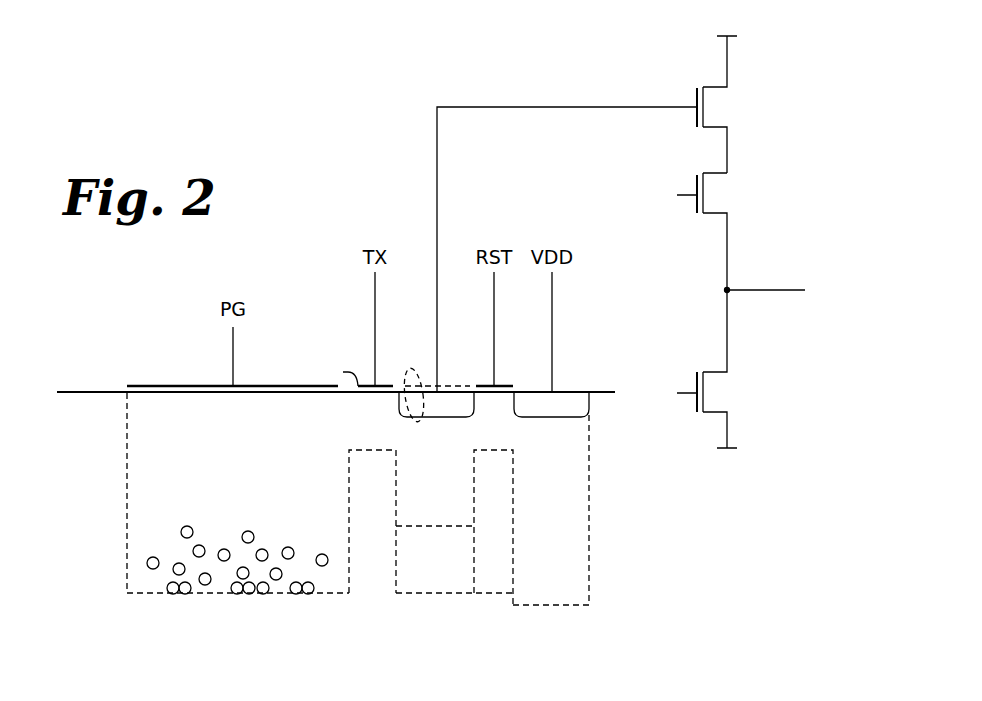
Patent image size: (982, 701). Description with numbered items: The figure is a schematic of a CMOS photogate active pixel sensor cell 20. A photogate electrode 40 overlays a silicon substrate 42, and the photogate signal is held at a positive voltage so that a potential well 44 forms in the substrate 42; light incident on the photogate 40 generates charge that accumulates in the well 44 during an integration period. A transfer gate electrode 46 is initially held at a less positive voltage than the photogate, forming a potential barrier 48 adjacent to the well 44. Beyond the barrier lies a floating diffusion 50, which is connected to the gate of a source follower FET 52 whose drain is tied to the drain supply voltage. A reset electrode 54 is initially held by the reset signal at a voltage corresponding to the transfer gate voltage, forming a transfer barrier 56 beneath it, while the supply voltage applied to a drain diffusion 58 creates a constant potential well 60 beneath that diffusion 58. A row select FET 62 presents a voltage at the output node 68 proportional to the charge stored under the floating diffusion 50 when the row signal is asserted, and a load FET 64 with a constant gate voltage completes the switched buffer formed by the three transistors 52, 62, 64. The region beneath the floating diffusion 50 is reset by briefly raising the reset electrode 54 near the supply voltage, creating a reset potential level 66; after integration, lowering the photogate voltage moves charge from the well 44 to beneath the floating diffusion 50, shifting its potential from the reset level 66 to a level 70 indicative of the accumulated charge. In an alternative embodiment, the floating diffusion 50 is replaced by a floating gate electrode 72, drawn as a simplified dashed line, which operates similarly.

The pixel sensor cell 20 is at (325, 168).
The photogate electrode 40 is at (283, 387).
The silicon substrate 42 is at (88, 512).
The potential well 44 is at (220, 595).
The transfer gate electrode 46 is at (392, 387).
The potential barrier 48 is at (370, 449).
The floating diffusion 50 is at (450, 392).
The source follower FET 52 is at (692, 95).
The reset electrode 54 is at (503, 387).
The transfer barrier 56 is at (502, 449).
The drain diffusion 58 is at (565, 393).
The constant potential well 60 is at (558, 602).
The row select FET 62 is at (692, 180).
The load FET 64 is at (692, 375).
The reset potential level 66 is at (497, 595).
The node OUT 68 is at (775, 293).
The potential level 70 is at (447, 496).
The floating gate electrode 72 is at (418, 410).